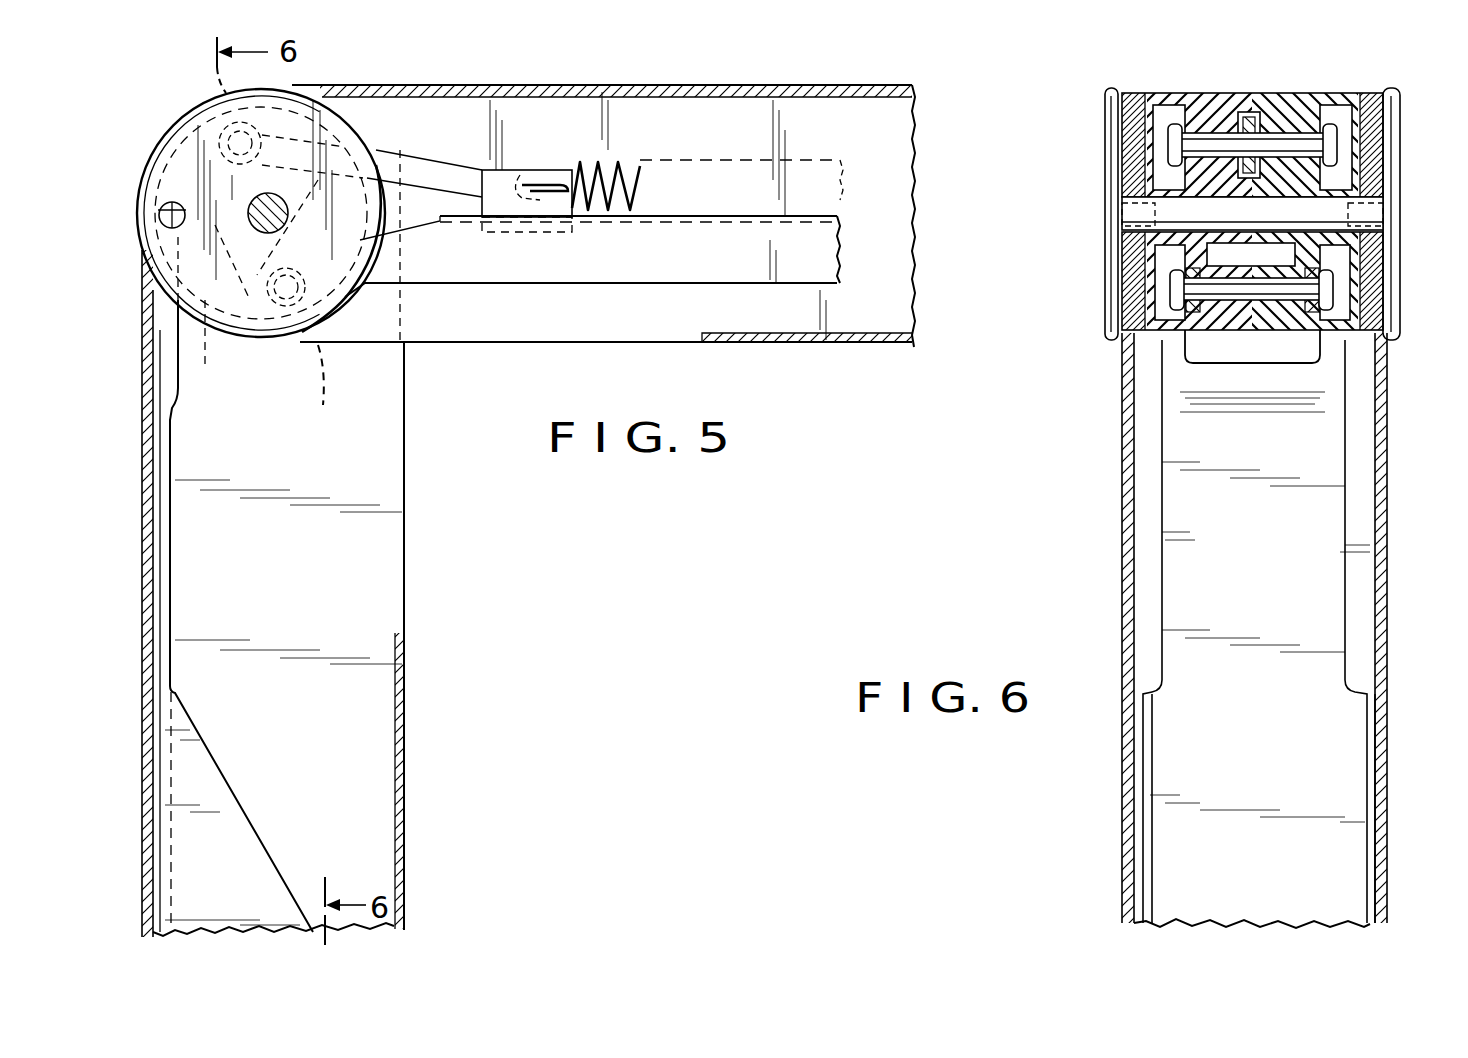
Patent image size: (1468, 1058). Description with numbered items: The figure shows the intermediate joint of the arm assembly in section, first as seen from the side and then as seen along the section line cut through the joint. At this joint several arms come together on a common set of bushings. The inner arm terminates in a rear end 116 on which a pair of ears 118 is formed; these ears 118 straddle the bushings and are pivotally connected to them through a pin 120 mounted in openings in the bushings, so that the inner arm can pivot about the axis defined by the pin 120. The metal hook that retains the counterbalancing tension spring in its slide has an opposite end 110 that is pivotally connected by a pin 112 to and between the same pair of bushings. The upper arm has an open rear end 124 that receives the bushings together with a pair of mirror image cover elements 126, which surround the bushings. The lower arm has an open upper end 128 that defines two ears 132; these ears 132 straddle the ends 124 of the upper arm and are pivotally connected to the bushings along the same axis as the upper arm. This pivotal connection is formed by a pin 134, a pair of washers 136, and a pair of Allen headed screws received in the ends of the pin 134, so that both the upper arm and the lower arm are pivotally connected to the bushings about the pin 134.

In FIG. 6, the opposite end of hook 110 is at (1256, 130).
In FIG. 6, the pin 112 is at (1330, 150).
In FIG. 5, the rear end of arm 116 is at (148, 597).
In FIG. 6, the rear end of arm 116 is at (1254, 630).
In FIG. 6, the ears 118 is at (1190, 318).
In FIG. 6, the pin 120 is at (1270, 285).
In FIG. 5, the rear end of arm 124 is at (303, 86).
In FIG. 6, the rear end of arm 124 is at (1135, 97).
In FIG. 6, the cover elements 126 is at (1258, 95).
In FIG. 5, the upper end of lower arm 128 is at (150, 314).
In FIG. 6, the ears 132 is at (1118, 92).
In FIG. 6, the pin 134 is at (1375, 215).
In FIG. 6, the washers 136 is at (1105, 300).